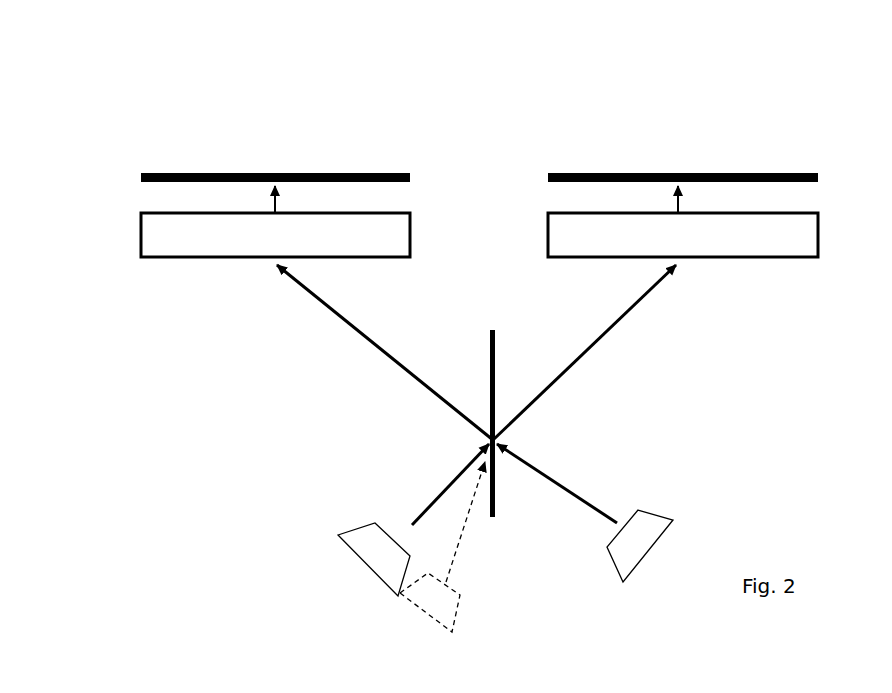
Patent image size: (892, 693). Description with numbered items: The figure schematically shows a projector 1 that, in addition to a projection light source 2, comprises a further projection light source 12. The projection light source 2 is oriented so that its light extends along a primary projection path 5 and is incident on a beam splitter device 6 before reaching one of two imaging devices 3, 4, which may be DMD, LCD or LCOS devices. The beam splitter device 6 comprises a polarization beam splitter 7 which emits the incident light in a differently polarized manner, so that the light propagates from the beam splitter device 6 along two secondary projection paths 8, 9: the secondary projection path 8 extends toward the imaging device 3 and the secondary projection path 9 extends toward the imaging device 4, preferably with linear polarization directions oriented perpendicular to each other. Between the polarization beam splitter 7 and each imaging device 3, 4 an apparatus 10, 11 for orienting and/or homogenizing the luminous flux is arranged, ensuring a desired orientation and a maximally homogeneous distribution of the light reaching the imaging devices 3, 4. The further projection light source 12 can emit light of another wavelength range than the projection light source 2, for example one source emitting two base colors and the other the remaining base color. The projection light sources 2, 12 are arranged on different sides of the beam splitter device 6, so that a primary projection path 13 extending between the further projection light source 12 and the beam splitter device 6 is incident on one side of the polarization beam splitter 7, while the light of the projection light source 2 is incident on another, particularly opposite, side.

The projector 1 is at (503, 118).
The projection light source 2 is at (336, 534).
The imaging device 3 is at (197, 150).
The imaging device 4 is at (745, 160).
The primary projection path 5 is at (430, 498).
The beam splitter device 6 is at (508, 480).
The polarization beam splitter 7 is at (495, 500).
The secondary projection path 8 is at (377, 352).
The secondary projection path 9 is at (623, 315).
The apparatus for orienting and/or homogenizing the luminous flux 10 is at (140, 225).
The apparatus for orienting and/or homogenizing the luminous flux 11 is at (818, 240).
The further projection light source 12 is at (418, 618).
The primary projection path 13 is at (563, 483).